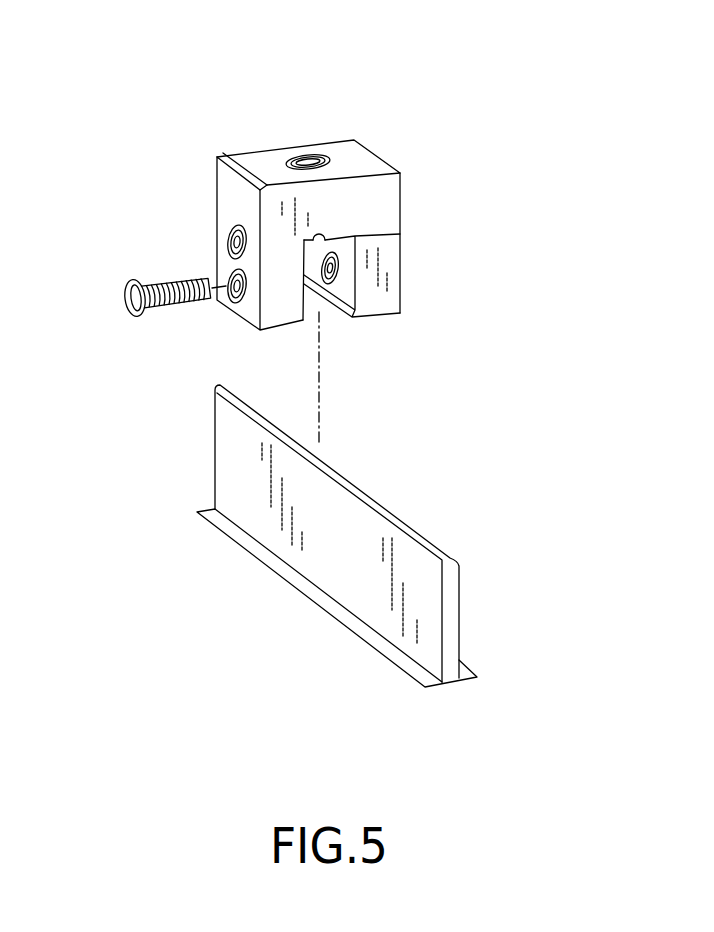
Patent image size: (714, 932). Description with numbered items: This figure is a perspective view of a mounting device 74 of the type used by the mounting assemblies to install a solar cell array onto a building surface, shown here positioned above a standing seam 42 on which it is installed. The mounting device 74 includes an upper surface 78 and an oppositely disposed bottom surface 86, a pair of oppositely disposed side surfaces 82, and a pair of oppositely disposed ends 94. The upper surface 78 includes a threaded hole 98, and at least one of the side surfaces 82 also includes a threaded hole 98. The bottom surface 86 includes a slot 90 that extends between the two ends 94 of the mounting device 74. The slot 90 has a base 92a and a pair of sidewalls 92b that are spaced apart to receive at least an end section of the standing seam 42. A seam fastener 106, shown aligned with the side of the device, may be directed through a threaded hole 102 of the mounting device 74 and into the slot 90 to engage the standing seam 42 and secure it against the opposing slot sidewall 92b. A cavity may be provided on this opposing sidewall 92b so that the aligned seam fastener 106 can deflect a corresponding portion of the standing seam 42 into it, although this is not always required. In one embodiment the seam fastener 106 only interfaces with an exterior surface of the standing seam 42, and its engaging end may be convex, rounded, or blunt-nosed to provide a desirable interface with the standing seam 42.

The standing seam 42 is at (460, 593).
The mounting device 74 is at (463, 106).
The upper surface 78 is at (242, 156).
The side surfaces 82 is at (233, 202).
The bottom surface 86 is at (373, 317).
The slot 90 is at (338, 350).
The base 92a is at (331, 238).
The sidewalls 92b is at (345, 262).
The ends 94 is at (277, 147).
The threaded hole 98 is at (315, 152).
The threaded hole 102 is at (242, 310).
The seam fastener 106 is at (125, 302).